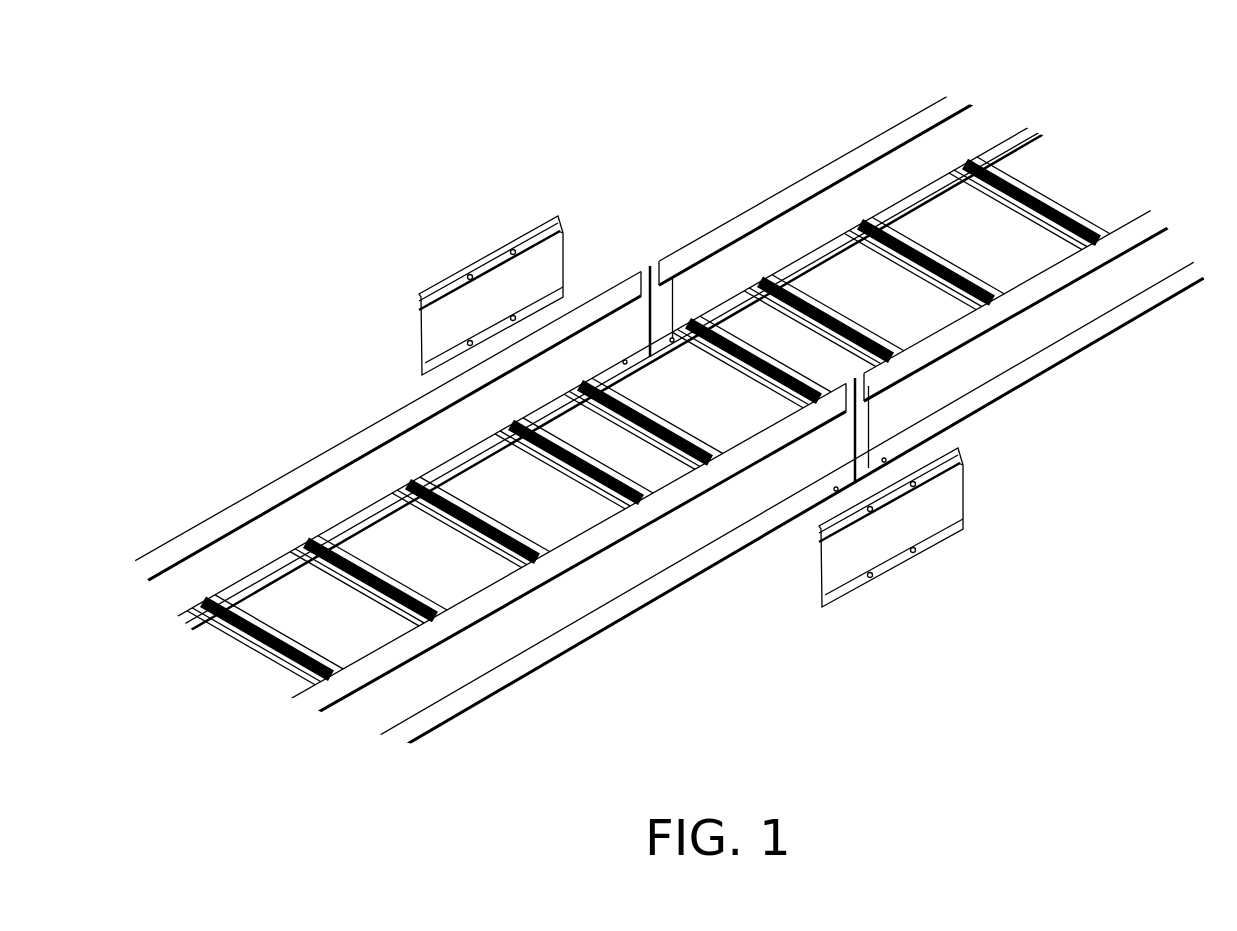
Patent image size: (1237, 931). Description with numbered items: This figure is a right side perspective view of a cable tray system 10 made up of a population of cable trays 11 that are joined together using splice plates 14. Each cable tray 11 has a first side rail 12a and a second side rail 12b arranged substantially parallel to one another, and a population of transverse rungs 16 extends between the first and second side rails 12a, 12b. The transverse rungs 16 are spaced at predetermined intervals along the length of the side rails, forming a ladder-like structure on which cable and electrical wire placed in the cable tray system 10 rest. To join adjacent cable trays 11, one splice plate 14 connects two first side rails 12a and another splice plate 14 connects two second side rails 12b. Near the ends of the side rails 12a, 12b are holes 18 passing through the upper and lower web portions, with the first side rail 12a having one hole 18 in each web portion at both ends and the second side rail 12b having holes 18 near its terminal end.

The cable tray system 10 is at (602, 66).
The cable tray 11 is at (830, 134).
The first side rail 12a is at (757, 198).
The second side rail 12b is at (1128, 326).
The splice plate 14 is at (487, 252).
The transverse rung 16 is at (282, 656).
The hole 18 is at (672, 336).